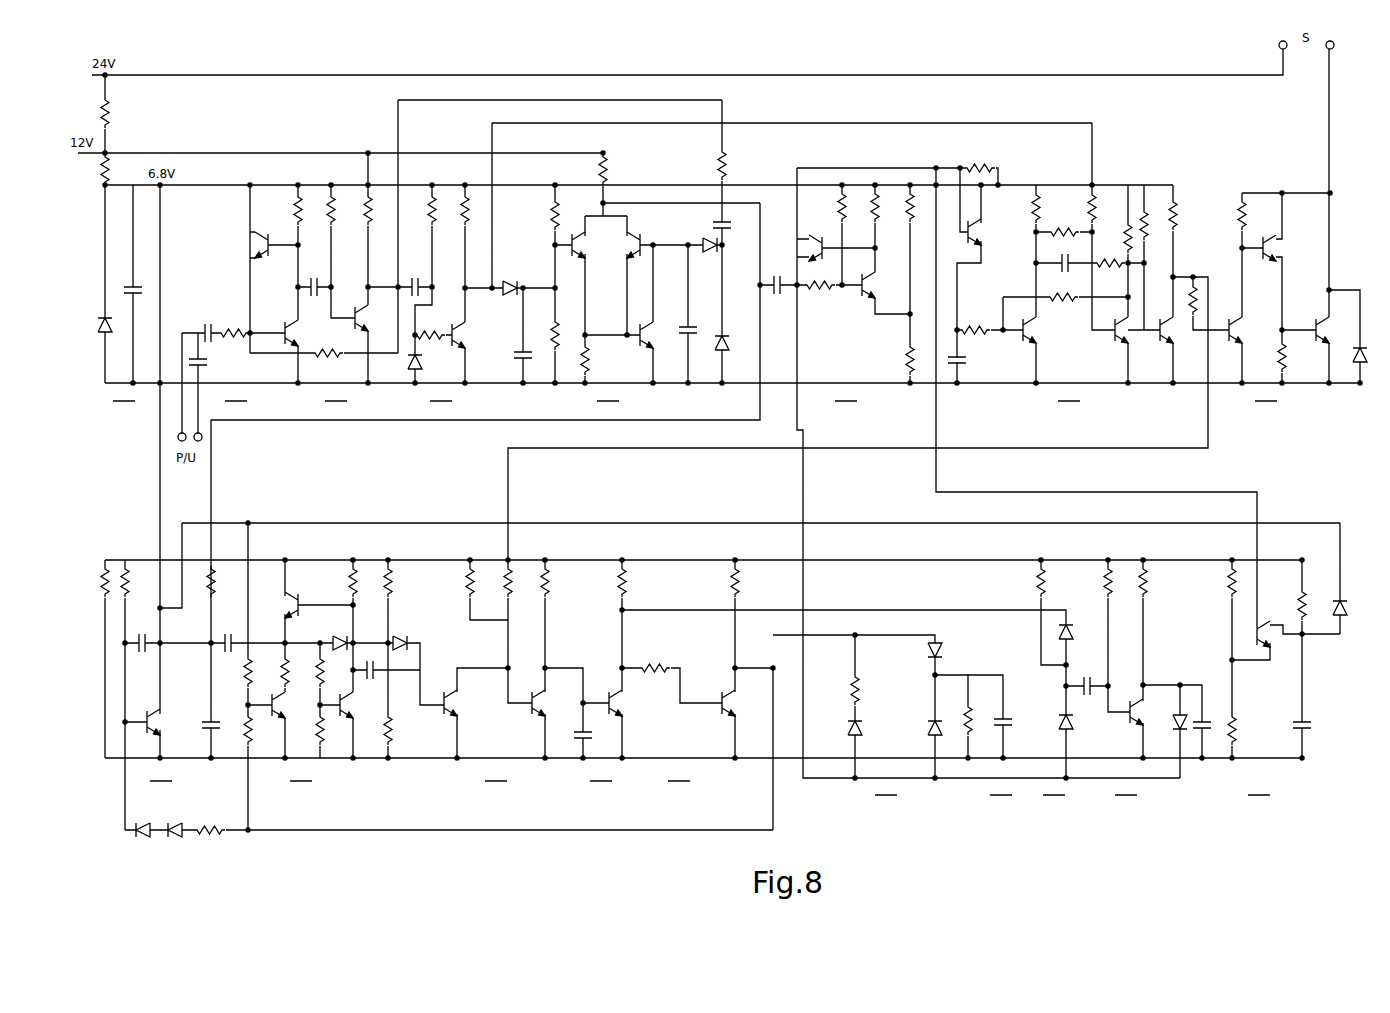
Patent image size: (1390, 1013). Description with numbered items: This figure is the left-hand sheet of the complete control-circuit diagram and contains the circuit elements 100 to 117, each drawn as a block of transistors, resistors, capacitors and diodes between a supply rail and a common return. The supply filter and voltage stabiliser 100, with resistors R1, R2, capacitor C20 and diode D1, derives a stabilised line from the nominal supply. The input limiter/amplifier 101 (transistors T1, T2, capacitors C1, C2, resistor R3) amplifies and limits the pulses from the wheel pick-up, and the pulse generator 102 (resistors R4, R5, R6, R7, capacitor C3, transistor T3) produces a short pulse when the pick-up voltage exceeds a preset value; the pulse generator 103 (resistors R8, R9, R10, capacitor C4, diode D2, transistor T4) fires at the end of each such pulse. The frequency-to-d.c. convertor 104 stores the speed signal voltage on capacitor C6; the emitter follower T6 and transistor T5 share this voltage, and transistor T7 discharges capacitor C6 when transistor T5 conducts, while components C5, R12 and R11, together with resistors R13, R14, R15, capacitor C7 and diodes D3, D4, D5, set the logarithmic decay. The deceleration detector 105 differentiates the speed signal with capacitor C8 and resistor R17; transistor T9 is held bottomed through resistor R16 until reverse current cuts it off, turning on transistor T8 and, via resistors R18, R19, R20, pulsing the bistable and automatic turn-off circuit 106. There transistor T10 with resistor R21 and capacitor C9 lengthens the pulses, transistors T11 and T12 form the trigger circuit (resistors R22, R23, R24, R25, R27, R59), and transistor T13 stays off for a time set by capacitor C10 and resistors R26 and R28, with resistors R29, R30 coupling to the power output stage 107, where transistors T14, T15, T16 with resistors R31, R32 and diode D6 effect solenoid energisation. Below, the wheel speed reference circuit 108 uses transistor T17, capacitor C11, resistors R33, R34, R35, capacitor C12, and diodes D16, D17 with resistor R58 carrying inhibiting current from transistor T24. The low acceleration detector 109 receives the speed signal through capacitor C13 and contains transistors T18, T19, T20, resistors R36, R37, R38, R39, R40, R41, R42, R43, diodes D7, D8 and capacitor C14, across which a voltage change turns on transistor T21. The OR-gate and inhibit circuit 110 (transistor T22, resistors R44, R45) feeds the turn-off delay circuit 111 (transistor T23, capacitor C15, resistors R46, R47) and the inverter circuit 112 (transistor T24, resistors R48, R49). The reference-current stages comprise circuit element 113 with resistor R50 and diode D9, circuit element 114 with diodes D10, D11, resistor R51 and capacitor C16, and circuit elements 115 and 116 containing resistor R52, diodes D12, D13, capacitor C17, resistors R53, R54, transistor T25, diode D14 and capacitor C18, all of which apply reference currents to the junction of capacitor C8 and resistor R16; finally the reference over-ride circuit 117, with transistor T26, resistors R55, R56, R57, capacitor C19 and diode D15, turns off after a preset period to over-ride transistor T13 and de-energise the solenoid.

The supply filter and voltage stabiliser 100 is at (120, 249).
The input limiter/amplifier 101 is at (252, 316).
The pulse generator 102 is at (342, 297).
The pulse generator 103 is at (432, 297).
The frequency-to-d.c. convertor 104 is at (621, 275).
The deceleration (slip) detector 105 is at (840, 296).
The bistable and automatic turn-off circuit 106 is at (1086, 271).
The power output stage 107 is at (1287, 300).
The wheel speed reference circuit 108 is at (156, 711).
The low acceleration detector 109 is at (313, 673).
The OR-gate and inhibit circuit 110 is at (506, 673).
The turn-off delay circuit 111 is at (614, 673).
The inverter circuit 112 is at (702, 673).
The reference current circuit element 113 is at (875, 734).
The reference current circuit element 114 is at (968, 717).
The reference current circuit element 115 is at (1054, 680).
The reference current circuit element 116 is at (1155, 680).
The reference over-ride circuit 117 is at (1274, 680).
The resistor R1 is at (115, 112).
The resistor R2 is at (114, 169).
The resistor R3 is at (233, 324).
The resistor R4 is at (307, 209).
The resistor R5 is at (340, 209).
The resistor R6 is at (377, 209).
The resistor R7 is at (327, 362).
The resistor R8 is at (420, 209).
The resistor R9 is at (455, 209).
The resistor R10 is at (429, 344).
The resistor R11 is at (543, 334).
The resistor R12 is at (568, 214).
The resistor R13 is at (598, 359).
The resistor R14 is at (616, 169).
The resistor R15 is at (736, 164).
The resistor R16 is at (819, 298).
The resistor R17 is at (829, 206).
The resistor R18 is at (863, 206).
The resistor R19 is at (898, 206).
The resistor R20 is at (895, 359).
The resistor R21 is at (979, 157).
The resistor R22 is at (974, 320).
The resistor R23 is at (1049, 207).
The resistor R24 is at (1063, 223).
The resistor R25 is at (1062, 289).
The resistor R26 is at (1109, 256).
The resistor R27 is at (1115, 237).
The resistor R28 is at (1156, 224).
The resistor R29 is at (1187, 209).
The resistor R30 is at (1206, 298).
The resistor R31 is at (1227, 214).
The resistor R32 is at (1296, 358).
The resistor R33 is at (100, 581).
The resistor R34 is at (138, 581).
The resistor R35 is at (224, 581).
The resistor R36 is at (233, 671).
The resistor R37 is at (261, 729).
The resistor R38 is at (271, 671).
The resistor R39 is at (307, 671).
The resistor R40 is at (333, 729).
The resistor R41 is at (338, 581).
The resistor R42 is at (401, 581).
The resistor R43 is at (401, 729).
The resistor R44 is at (455, 581).
The resistor R45 is at (494, 581).
The resistor R46 is at (558, 581).
The resistor R47 is at (636, 581).
The resistor R48 is at (654, 658).
The resistor R49 is at (748, 581).
The resistor R50 is at (869, 689).
The resistor R51 is at (956, 718).
The resistor R52 is at (1026, 581).
The resistor R53 is at (1095, 581).
The resistor R54 is at (1156, 581).
The resistor R55 is at (1219, 581).
The resistor R56 is at (1287, 604).
The resistor R57 is at (1246, 729).
The resistor R58 is at (209, 820).
The resistor R59 is at (1104, 207).
The capacitor C1 is at (206, 362).
The capacitor C2 is at (206, 326).
The capacitor C3 is at (314, 280).
The capacitor C4 is at (415, 280).
The capacitor C5 is at (510, 355).
The capacitor C6 is at (693, 325).
The capacitor C7 is at (710, 221).
The capacitor C8 is at (777, 279).
The capacitor C9 is at (966, 360).
The capacitor C10 is at (1061, 257).
The capacitor C11 is at (142, 636).
The capacitor C12 is at (201, 718).
The capacitor C13 is at (230, 636).
The capacitor C14 is at (372, 663).
The capacitor C15 is at (595, 736).
The capacitor C16 is at (1014, 720).
The capacitor C17 is at (1088, 679).
The capacitor C18 is at (1212, 718).
The capacitor C19 is at (1313, 725).
The capacitor C20 is at (124, 283).
The diode D1 is at (112, 334).
The diode D2 is at (404, 363).
The diode D3 is at (510, 280).
The diode D4 is at (709, 254).
The diode D5 is at (731, 338).
The diode D6 is at (1350, 360).
The diode D7 is at (340, 635).
The diode D8 is at (400, 635).
The diode D9 is at (865, 728).
The diode D10 is at (949, 650).
The diode D11 is at (922, 728).
The diode D12 is at (1080, 632).
The diode D13 is at (1080, 722).
The diode D14 is at (1170, 729).
The diode D15 is at (1329, 596).
The diode D16 is at (145, 822).
The diode D17 is at (177, 840).
The transistor T1 is at (249, 245).
The transistor T2 is at (300, 333).
The transistor T3 is at (371, 318).
The transistor T4 is at (464, 335).
The transistor T5 is at (586, 245).
The transistor T6 is at (625, 245).
The transistor T7 is at (653, 335).
The transistor T8 is at (796, 245).
The transistor T9 is at (874, 285).
The transistor T10 is at (987, 232).
The transistor T11 is at (1043, 330).
The transistor T12 is at (1131, 330).
The transistor T13 is at (1176, 330).
The transistor T14 is at (1248, 330).
The transistor T15 is at (1284, 248).
The transistor T16 is at (1335, 330).
The transistor T17 is at (165, 722).
The transistor T18 is at (289, 705).
The transistor T19 is at (281, 605).
The transistor T20 is at (357, 705).
The transistor T21 is at (461, 703).
The transistor T22 is at (549, 703).
The transistor T23 is at (626, 703).
The transistor T24 is at (739, 703).
The transistor T25 is at (1147, 712).
The transistor T26 is at (1247, 634).